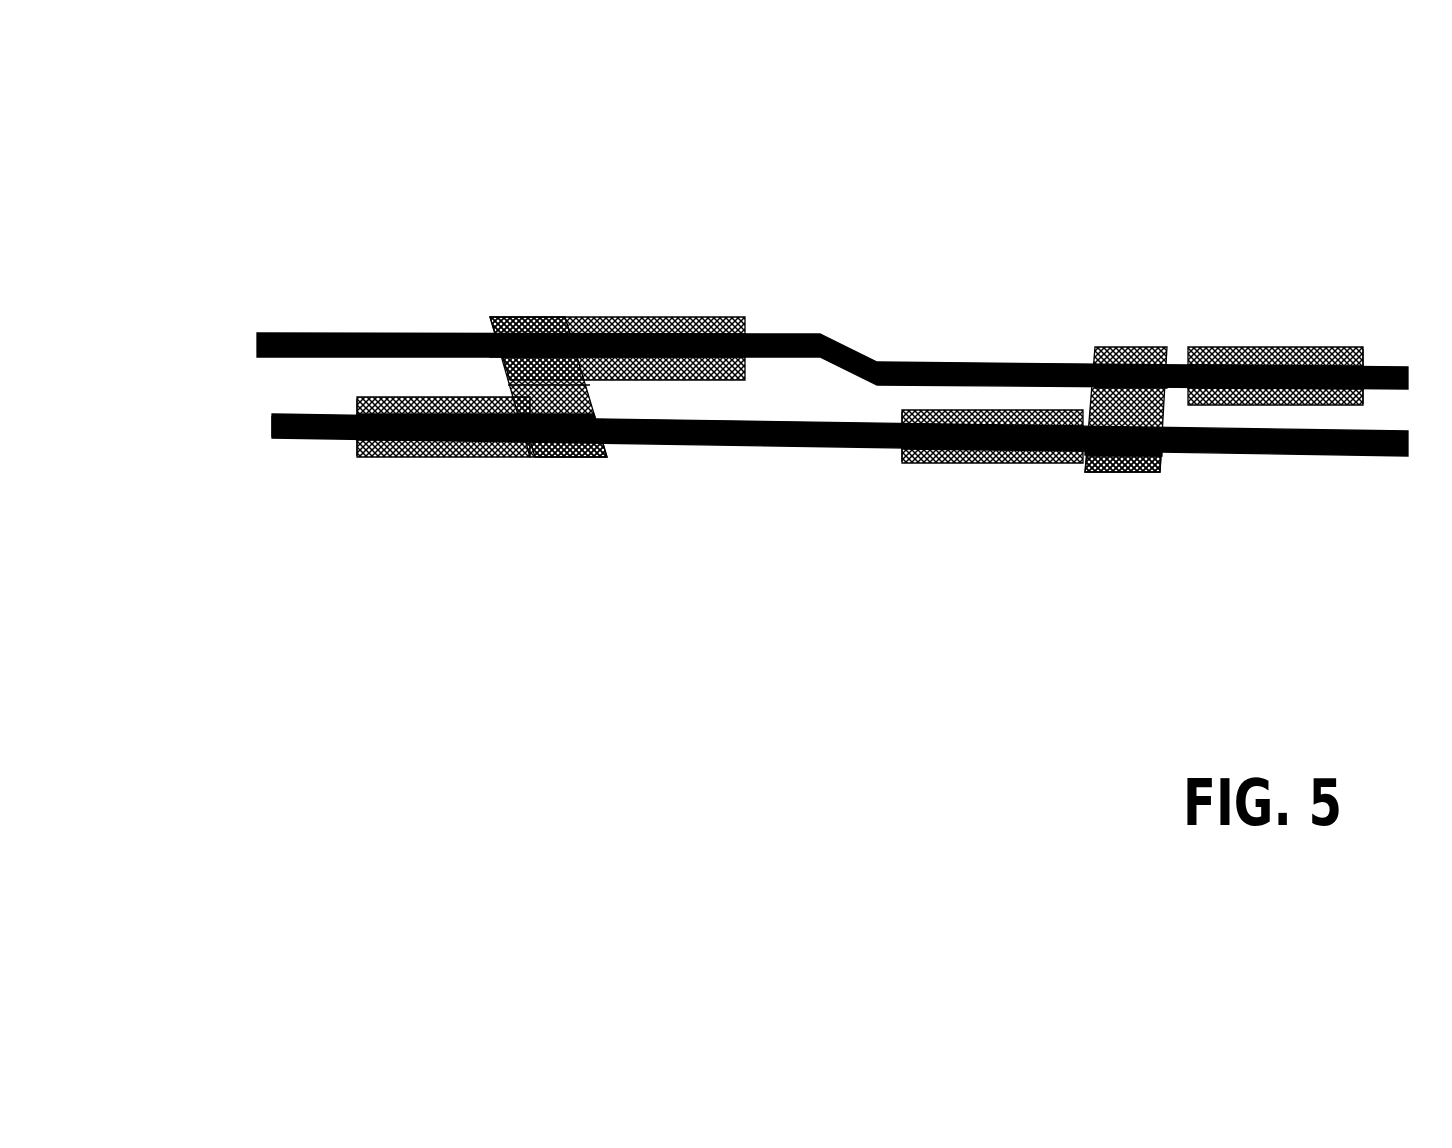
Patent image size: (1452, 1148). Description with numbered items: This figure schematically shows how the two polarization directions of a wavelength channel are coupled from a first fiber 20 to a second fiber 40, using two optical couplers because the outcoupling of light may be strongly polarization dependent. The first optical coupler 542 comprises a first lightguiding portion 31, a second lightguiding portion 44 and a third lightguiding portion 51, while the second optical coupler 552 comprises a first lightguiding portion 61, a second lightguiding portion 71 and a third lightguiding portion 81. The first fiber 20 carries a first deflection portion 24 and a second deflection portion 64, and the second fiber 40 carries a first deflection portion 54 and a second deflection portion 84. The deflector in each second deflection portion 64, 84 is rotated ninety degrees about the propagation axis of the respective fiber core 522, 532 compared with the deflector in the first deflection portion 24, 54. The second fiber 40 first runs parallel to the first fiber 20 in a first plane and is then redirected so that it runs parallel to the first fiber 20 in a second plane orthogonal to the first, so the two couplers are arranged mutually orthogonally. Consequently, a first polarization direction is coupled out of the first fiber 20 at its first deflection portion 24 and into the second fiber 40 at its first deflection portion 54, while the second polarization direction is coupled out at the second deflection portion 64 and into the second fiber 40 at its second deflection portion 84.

The first fiber 20 is at (247, 417).
The second fiber 40 is at (247, 333).
The first deflection portion of first fiber 24 is at (523, 483).
The first lightguiding portion 31 is at (352, 457).
The second lightguiding portion 44 is at (602, 397).
The third lightguiding portion 51 is at (580, 318).
The first deflection portion of second fiber 54 is at (728, 283).
The first lightguiding portion 61 is at (900, 468).
The second deflection portion of first fiber 64 is at (1078, 493).
The second lightguiding portion 71 is at (1094, 340).
The third lightguiding portion 81 is at (1362, 332).
The second deflection portion of second fiber 84 is at (1358, 305).
The fiber core 522 is at (271, 434).
The fiber core 532 is at (318, 332).
The first optical coupler 542 is at (578, 477).
The second optical coupler 552 is at (1132, 502).